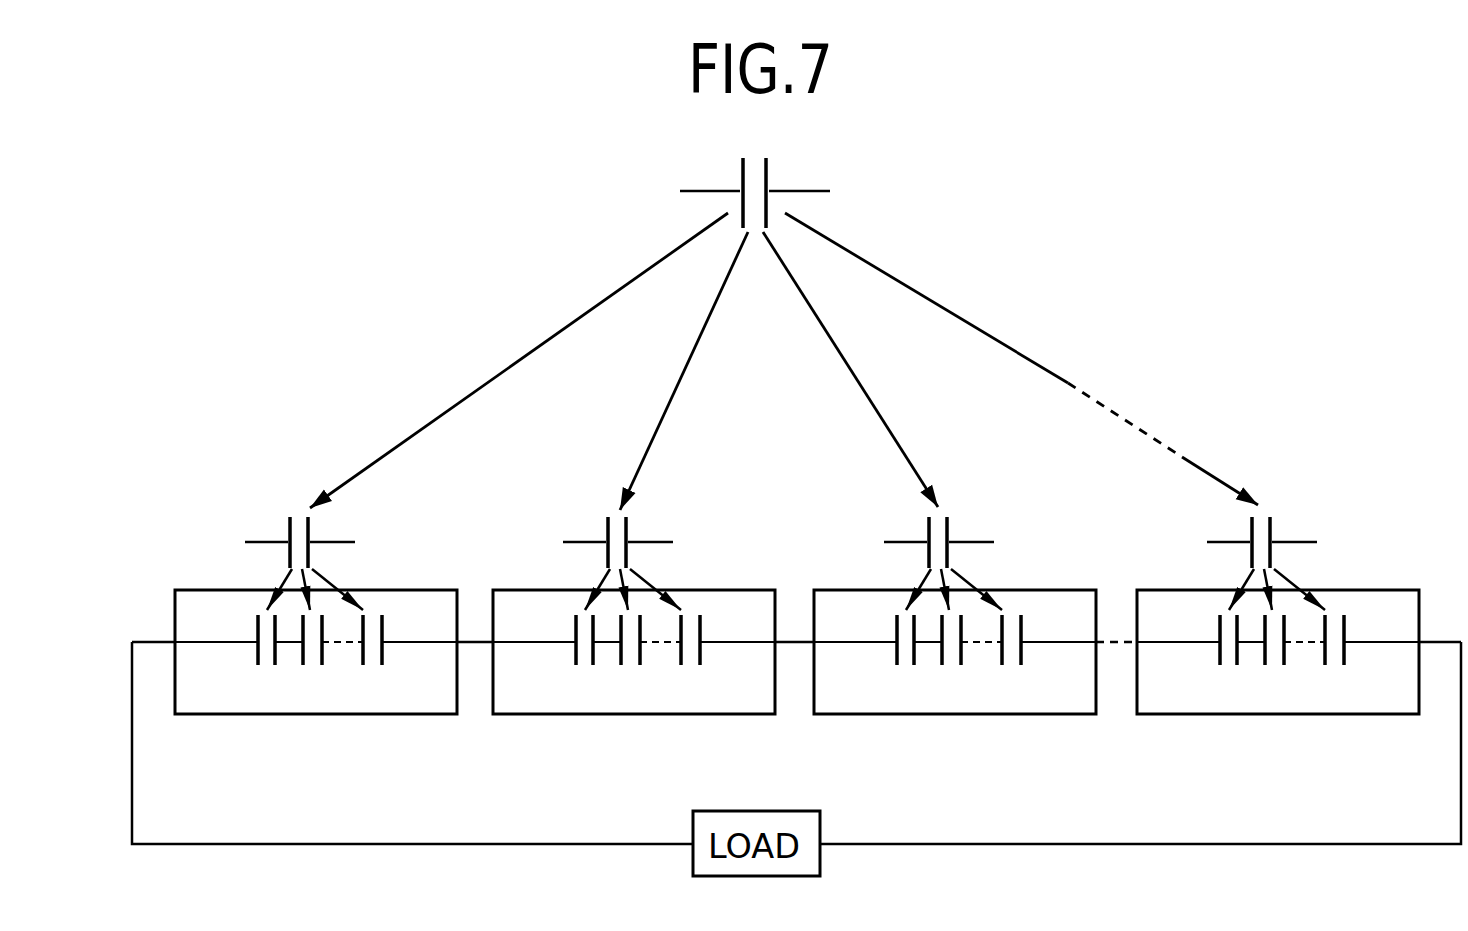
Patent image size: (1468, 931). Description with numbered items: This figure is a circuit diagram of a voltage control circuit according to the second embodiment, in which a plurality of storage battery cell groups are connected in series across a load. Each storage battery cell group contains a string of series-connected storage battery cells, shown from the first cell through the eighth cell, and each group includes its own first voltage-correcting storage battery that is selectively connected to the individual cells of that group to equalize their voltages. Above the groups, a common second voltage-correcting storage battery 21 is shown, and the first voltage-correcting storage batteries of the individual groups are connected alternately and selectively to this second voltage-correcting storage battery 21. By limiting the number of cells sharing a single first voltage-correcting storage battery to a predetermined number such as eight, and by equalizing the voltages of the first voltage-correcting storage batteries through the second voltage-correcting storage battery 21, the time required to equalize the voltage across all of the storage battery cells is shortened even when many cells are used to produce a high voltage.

The second voltage-correcting storage battery 21 is at (769, 178).